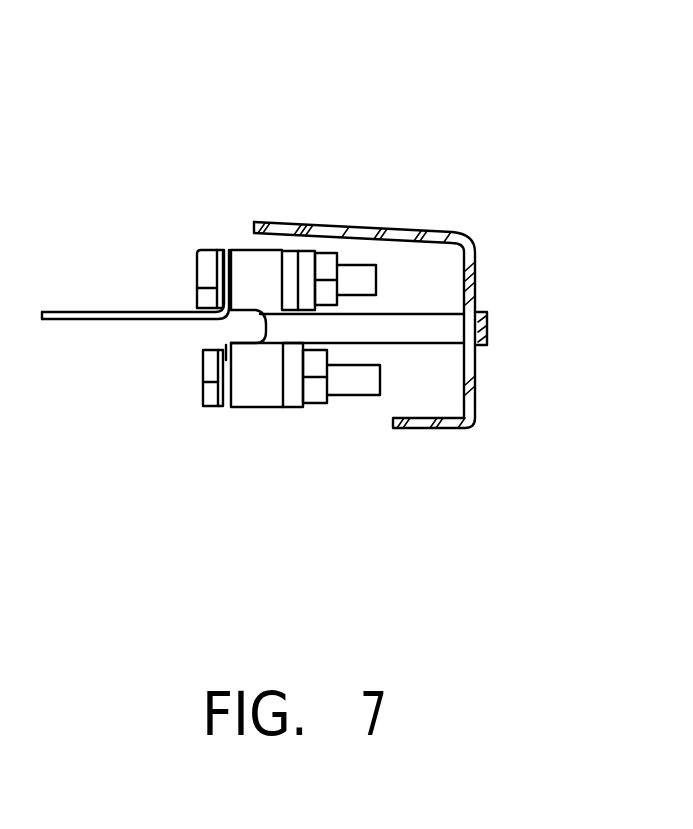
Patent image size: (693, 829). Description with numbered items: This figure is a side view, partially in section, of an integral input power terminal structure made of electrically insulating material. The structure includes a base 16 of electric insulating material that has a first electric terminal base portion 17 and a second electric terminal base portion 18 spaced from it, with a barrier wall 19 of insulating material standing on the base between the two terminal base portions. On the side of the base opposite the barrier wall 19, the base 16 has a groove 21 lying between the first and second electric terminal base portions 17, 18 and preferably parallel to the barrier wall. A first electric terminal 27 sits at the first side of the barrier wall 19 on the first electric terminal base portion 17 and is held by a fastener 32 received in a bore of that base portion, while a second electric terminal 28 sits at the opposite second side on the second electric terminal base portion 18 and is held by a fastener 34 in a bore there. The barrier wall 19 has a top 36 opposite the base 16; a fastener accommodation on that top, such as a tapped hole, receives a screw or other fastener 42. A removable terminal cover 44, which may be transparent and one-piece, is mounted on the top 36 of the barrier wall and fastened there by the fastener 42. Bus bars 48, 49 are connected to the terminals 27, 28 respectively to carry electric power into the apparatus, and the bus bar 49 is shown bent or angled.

The base 16 is at (240, 418).
The first electric terminal base portion 17 is at (255, 282).
The second electric terminal base portion 18 is at (262, 380).
The barrier wall 19 is at (390, 330).
The groove 21 is at (245, 328).
The first electric terminal 27 is at (290, 266).
The second electric terminal 28 is at (293, 383).
The fastener 32 is at (363, 277).
The fastener 34 is at (362, 380).
The top of the barrier wall 36 is at (455, 327).
The fastener 42 is at (488, 316).
The removable terminal cover 44 is at (477, 392).
The bus bar 48 is at (220, 408).
The bus bar 49 is at (147, 311).